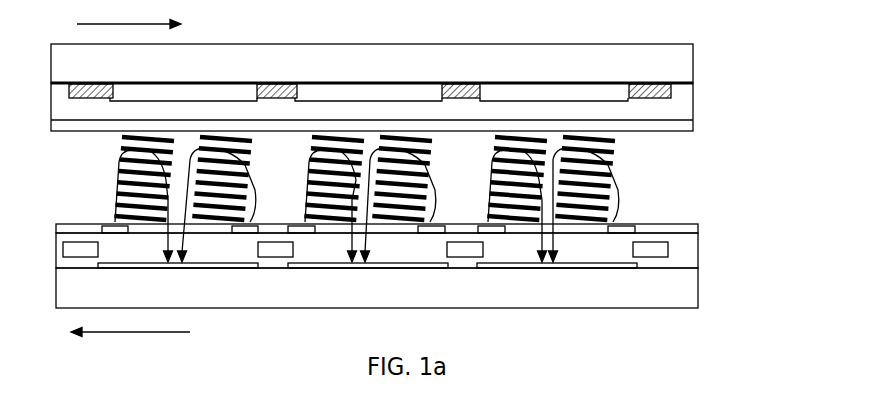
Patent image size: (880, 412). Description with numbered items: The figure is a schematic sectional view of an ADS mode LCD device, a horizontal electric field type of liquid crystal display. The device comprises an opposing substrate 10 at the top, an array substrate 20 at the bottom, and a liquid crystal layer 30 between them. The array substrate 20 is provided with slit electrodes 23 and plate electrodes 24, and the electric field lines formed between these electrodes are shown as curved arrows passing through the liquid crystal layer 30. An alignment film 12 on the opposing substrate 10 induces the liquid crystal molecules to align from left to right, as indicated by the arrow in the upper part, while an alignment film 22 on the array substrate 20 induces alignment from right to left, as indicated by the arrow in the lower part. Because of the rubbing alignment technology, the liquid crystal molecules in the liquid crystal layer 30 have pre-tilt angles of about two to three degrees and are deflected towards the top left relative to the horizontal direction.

The opposing substrate 10 is at (693, 63).
The alignment film 12 is at (693, 125).
The liquid crystal layer 30 is at (614, 172).
The slit electrodes 23 is at (628, 230).
The alignment film 22 is at (698, 228).
The array substrate 20 is at (698, 287).
The plate electrodes 24 is at (636, 268).